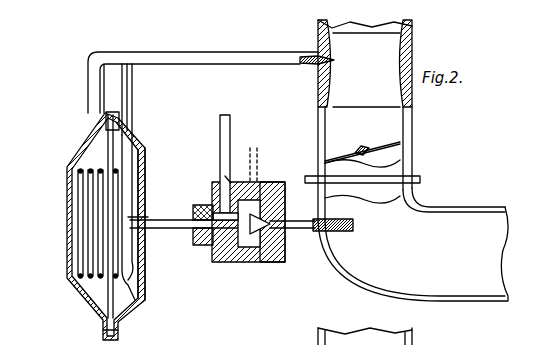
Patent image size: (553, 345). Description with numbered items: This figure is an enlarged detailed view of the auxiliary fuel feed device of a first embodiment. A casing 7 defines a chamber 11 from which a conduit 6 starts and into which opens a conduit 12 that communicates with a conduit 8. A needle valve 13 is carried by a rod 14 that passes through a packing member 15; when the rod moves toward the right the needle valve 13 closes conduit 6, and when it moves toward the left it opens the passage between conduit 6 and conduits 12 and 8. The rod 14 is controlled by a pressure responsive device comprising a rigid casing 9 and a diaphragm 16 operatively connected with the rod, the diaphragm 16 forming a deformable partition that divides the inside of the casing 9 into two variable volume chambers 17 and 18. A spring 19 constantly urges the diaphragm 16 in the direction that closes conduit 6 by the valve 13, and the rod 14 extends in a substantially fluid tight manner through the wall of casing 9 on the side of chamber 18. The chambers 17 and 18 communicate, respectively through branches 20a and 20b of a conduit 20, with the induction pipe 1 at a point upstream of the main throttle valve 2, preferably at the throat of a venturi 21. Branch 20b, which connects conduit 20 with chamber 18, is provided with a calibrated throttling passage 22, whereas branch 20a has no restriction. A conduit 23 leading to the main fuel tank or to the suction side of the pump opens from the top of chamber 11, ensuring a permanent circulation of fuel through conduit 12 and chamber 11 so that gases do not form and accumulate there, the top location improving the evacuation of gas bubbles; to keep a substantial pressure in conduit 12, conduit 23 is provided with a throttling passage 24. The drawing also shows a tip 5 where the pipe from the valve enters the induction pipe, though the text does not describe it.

The induction pipe 1 is at (457, 214).
The main throttle valve 2 is at (377, 147).
The nozzle tip 5 is at (352, 229).
The conduit 6 is at (299, 229).
The casing 7 is at (280, 262).
The conduit 8 is at (220, 146).
The rigid casing 9 is at (88, 296).
The chamber 11 is at (267, 182).
The conduit 12 is at (226, 233).
The needle valve 13 is at (240, 262).
The rod 14 is at (160, 229).
The packing member 15 is at (206, 210).
The diaphragm 16 is at (141, 150).
The variable volume chamber 17 is at (92, 160).
The variable volume chamber 18 is at (133, 304).
The spring 19 is at (95, 231).
The conduit 20 is at (186, 53).
The branch 20a is at (88, 83).
The branch 20b is at (133, 105).
The venturi 21 is at (393, 70).
The calibrated throttling passage 22 is at (133, 92).
The conduit 23 is at (260, 164).
The throttling passage 24 is at (230, 181).